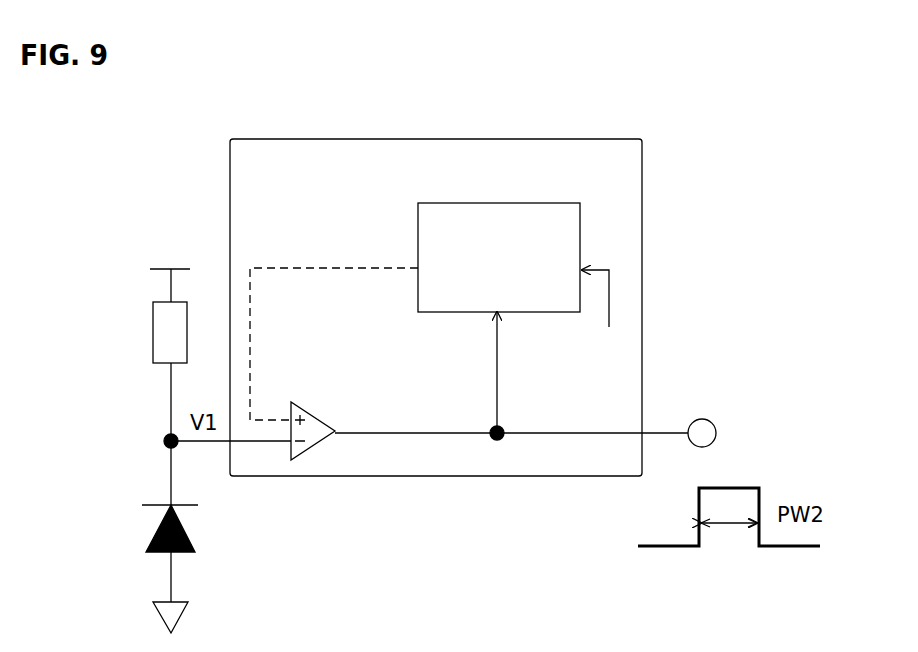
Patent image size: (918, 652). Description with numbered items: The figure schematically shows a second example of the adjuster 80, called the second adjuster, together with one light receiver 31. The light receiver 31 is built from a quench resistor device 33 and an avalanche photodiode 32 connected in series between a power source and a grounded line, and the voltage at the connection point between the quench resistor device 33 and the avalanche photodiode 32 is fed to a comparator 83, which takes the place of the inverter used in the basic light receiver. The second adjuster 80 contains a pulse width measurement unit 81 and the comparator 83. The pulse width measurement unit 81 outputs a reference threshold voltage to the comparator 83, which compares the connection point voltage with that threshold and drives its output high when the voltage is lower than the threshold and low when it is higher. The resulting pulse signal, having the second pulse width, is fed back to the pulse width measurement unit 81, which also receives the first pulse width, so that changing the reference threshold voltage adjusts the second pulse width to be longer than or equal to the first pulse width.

The adjuster 80 is at (451, 138).
The pulse width measurement unit 81 is at (530, 201).
The comparator 83 is at (309, 407).
The light receiver 31 is at (120, 428).
The avalanche photodiode 32 is at (152, 530).
The quench resistor device 33 is at (153, 333).